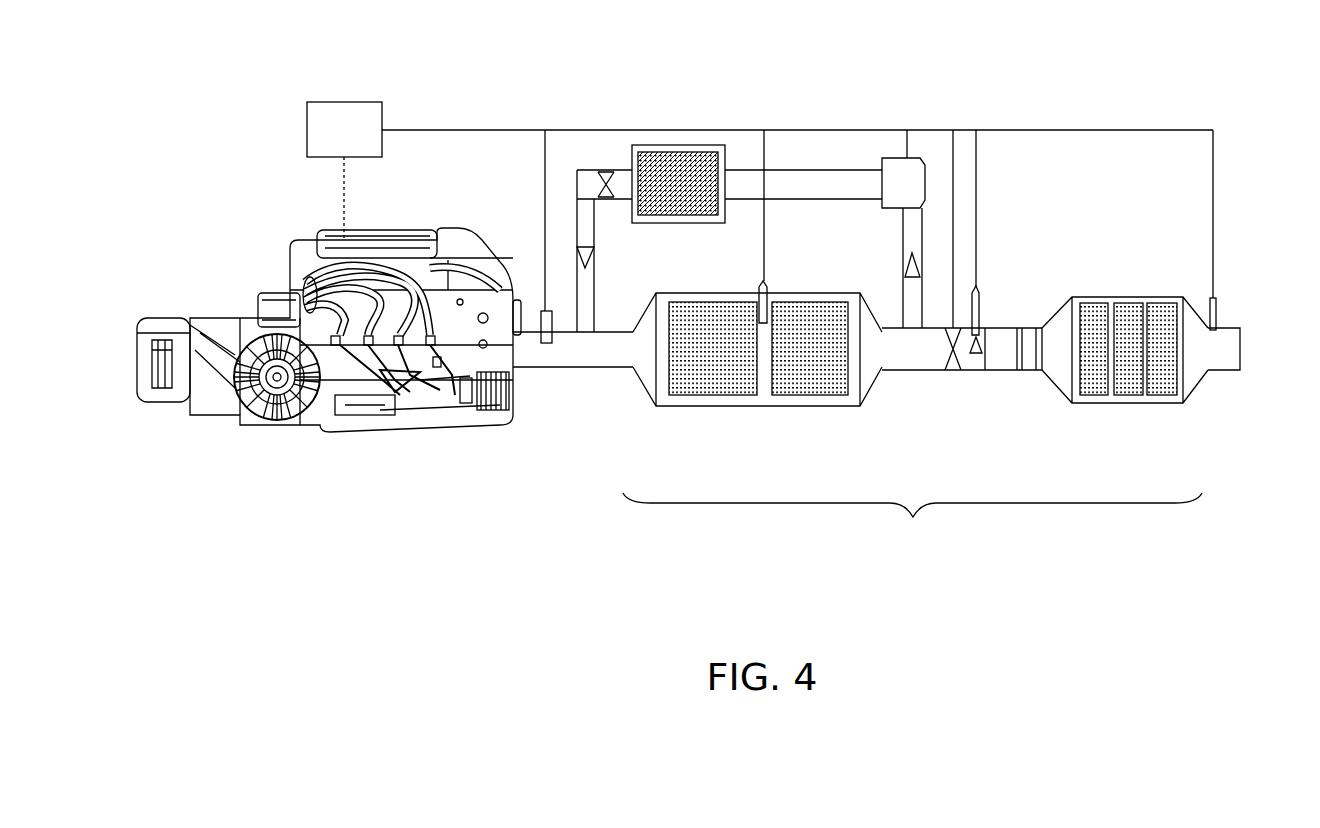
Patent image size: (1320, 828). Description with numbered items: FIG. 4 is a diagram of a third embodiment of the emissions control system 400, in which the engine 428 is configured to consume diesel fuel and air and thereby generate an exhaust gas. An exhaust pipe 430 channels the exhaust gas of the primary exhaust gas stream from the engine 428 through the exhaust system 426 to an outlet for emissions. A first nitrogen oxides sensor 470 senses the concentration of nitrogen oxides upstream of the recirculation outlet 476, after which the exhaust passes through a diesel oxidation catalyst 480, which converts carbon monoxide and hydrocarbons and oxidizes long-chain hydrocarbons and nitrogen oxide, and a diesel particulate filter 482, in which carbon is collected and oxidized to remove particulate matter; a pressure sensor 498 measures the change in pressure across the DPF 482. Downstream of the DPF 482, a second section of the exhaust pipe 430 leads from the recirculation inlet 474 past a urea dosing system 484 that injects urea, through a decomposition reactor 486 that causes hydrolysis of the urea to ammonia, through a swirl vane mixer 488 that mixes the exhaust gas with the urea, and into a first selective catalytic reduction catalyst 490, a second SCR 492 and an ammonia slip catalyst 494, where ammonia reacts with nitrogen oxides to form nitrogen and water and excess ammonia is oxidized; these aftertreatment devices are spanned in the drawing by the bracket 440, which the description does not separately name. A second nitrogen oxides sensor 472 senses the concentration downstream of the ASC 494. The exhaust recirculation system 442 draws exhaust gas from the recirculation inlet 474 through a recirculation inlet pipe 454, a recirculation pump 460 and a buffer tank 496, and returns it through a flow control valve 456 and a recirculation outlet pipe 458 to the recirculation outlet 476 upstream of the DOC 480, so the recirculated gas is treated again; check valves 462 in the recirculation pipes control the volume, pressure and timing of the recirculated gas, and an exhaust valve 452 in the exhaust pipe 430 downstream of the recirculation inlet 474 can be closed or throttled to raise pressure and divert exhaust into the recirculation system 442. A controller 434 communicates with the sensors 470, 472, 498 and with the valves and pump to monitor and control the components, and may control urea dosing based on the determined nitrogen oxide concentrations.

The emissions control system 400 is at (225, 76).
The exhaust system 426 is at (1221, 378).
The engine 428 is at (270, 455).
The exhaust pipe 430 is at (590, 345).
The controller 434 is at (325, 142).
The exhaust aftertreatment system 440 is at (932, 342).
The exhaust recirculation system 442 is at (849, 163).
The exhaust valve 452 is at (953, 372).
The recirculation inlet pipe 454 is at (903, 246).
The flow control valve 456 is at (606, 168).
The recirculation outlet pipe 458 is at (545, 155).
The recirculation pump 460 is at (915, 158).
The check valve 462 is at (582, 258).
The first nitrogen oxides sensor 470 is at (548, 345).
The second nitrogen oxides sensor 472 is at (1218, 320).
The recirculation inlet 474 is at (915, 335).
The recirculation outlet 476 is at (596, 365).
The diesel oxidation catalyst 480 is at (716, 398).
The diesel particulate filter 482 is at (810, 300).
The urea dosing system 484 is at (983, 310).
The decomposition reactor 486 is at (1005, 372).
The swirl vane mixer 488 is at (1040, 328).
The first selective catalytic reduction (SCR) 490 is at (1095, 398).
The second SCR 492 is at (1128, 398).
The ammonia slip catalyst 494 is at (1145, 300).
The buffer tank 496 is at (678, 148).
The pressure sensor 498 is at (752, 300).